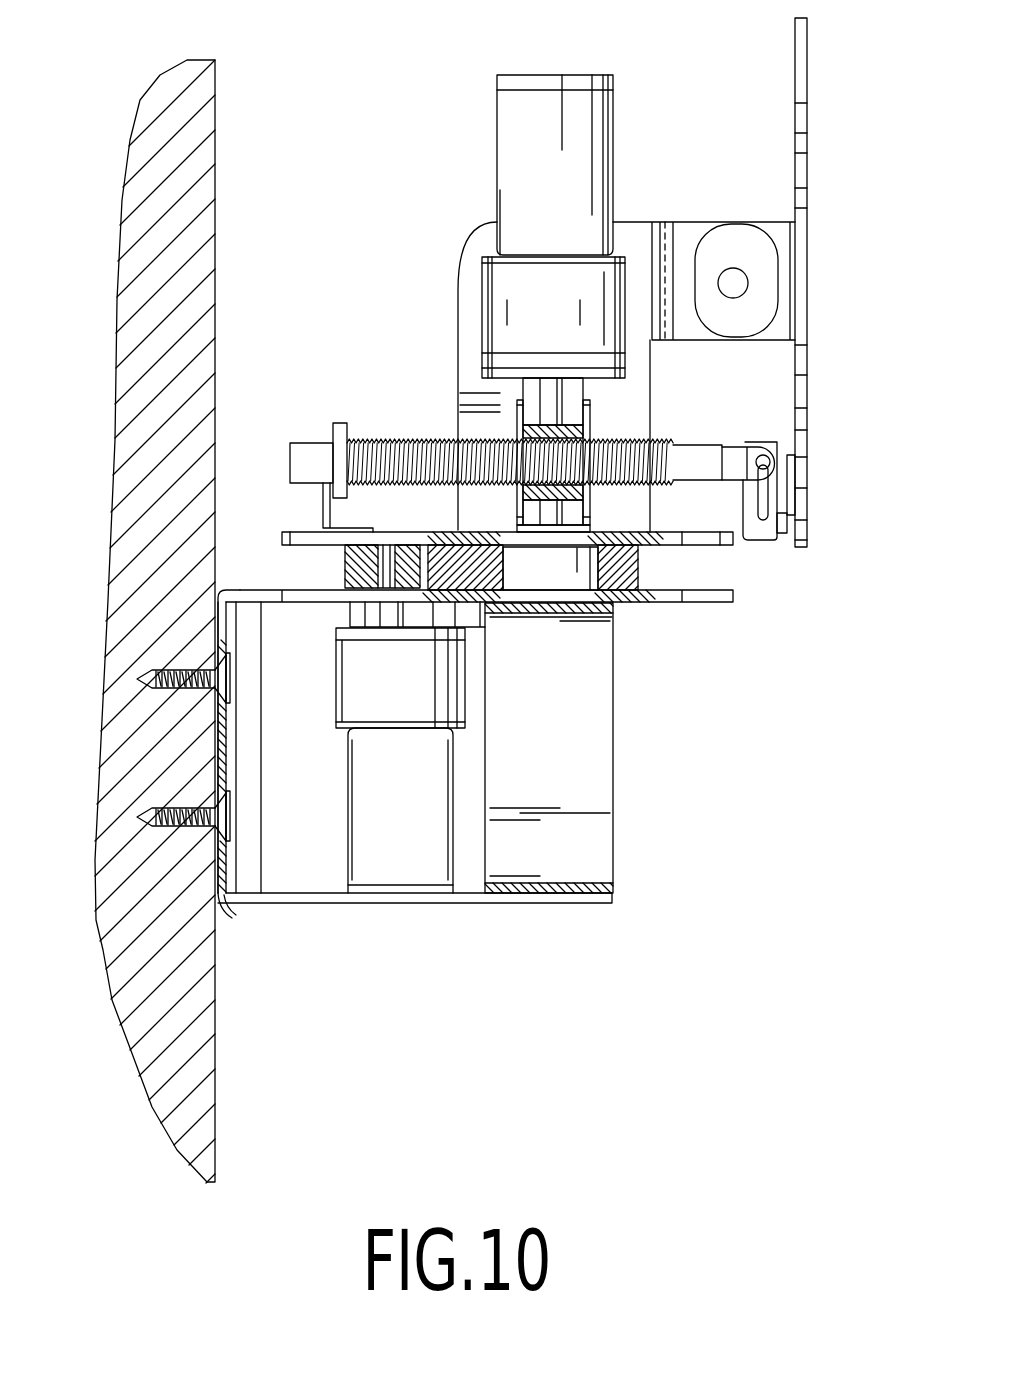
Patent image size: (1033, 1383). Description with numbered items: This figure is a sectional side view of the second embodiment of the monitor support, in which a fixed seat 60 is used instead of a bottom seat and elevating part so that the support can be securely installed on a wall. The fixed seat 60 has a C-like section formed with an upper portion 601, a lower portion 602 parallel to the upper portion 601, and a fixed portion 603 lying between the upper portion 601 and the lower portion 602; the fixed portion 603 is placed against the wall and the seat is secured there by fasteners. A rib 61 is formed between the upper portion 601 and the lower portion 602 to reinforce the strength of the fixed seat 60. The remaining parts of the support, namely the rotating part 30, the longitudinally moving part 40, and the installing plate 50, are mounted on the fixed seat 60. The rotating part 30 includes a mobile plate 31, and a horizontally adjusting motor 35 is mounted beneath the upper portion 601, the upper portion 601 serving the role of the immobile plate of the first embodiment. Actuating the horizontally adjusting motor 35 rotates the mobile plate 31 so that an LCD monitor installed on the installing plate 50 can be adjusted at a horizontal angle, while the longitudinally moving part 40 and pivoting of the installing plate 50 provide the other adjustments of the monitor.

The rotating part 30 is at (750, 602).
The mobile plate 31 is at (733, 546).
The horizontally adjusting motor 35 is at (410, 894).
The longitudinally moving part 40 is at (376, 410).
The installing plate 50 is at (803, 67).
The fixed seat 60 is at (217, 613).
The rib 61 is at (603, 847).
The upper portion 601 is at (703, 604).
The lower portion 602 is at (585, 905).
The fixed portion 603 is at (222, 900).